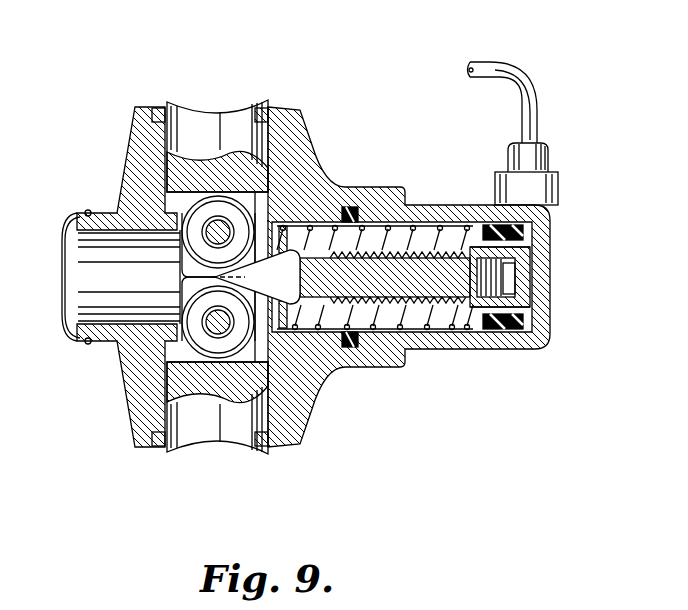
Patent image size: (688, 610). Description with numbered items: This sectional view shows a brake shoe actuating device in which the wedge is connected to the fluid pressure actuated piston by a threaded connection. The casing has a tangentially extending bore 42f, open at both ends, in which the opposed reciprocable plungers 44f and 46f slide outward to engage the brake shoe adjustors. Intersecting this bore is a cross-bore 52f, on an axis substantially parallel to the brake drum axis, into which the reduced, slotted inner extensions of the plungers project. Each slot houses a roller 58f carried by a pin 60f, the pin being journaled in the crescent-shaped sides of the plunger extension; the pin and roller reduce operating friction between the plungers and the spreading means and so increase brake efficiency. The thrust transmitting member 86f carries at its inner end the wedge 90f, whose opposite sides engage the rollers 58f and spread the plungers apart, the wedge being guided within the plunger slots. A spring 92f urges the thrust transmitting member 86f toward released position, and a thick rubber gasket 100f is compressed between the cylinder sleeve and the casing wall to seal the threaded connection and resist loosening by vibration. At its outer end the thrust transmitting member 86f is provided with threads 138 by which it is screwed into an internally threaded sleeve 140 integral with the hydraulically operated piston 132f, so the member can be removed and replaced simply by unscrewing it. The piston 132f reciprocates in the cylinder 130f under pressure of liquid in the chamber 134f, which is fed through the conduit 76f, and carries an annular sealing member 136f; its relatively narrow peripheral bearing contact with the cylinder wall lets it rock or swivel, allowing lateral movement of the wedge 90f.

The tangentially extending bore 42f is at (172, 198).
The plunger 44f is at (230, 118).
The plunger 46f is at (212, 428).
The cross-bore 52f is at (138, 308).
The roller 58f is at (122, 203).
The pin 60f is at (212, 220).
The conduit 76f is at (522, 77).
The thrust transmitting member 86f is at (368, 187).
The wedge 90f is at (290, 248).
The spring 92f is at (433, 307).
The rubber gasket 100f is at (344, 205).
The cylinder 130f is at (457, 343).
The piston 132f is at (483, 333).
The chamber 134f is at (525, 233).
The annular sealing member 136f is at (503, 333).
The threads 138 is at (380, 300).
The internally threaded sleeve 140 is at (408, 303).